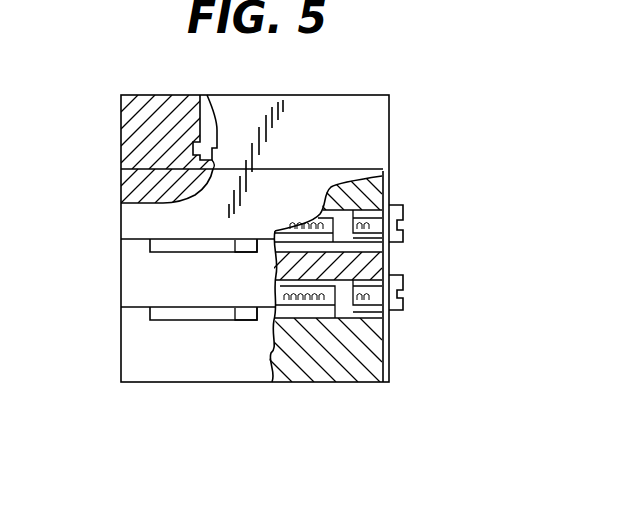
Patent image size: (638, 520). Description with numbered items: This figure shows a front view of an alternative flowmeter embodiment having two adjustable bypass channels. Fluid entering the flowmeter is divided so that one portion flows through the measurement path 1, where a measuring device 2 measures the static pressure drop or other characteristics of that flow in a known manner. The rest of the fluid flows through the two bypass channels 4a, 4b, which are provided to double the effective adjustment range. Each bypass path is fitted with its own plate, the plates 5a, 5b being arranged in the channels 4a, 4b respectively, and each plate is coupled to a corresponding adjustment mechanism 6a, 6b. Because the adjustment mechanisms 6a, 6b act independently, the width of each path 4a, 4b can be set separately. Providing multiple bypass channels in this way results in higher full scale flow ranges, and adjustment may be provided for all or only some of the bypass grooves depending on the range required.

The measurement path 1 is at (190, 155).
The measuring device 2 is at (201, 118).
The bypass channel 4a is at (168, 246).
The bypass channel 4b is at (168, 313).
The plate 5a is at (233, 262).
The plate 5b is at (241, 330).
The adjustment mechanism 6a is at (408, 198).
The adjustment mechanism 6b is at (408, 270).